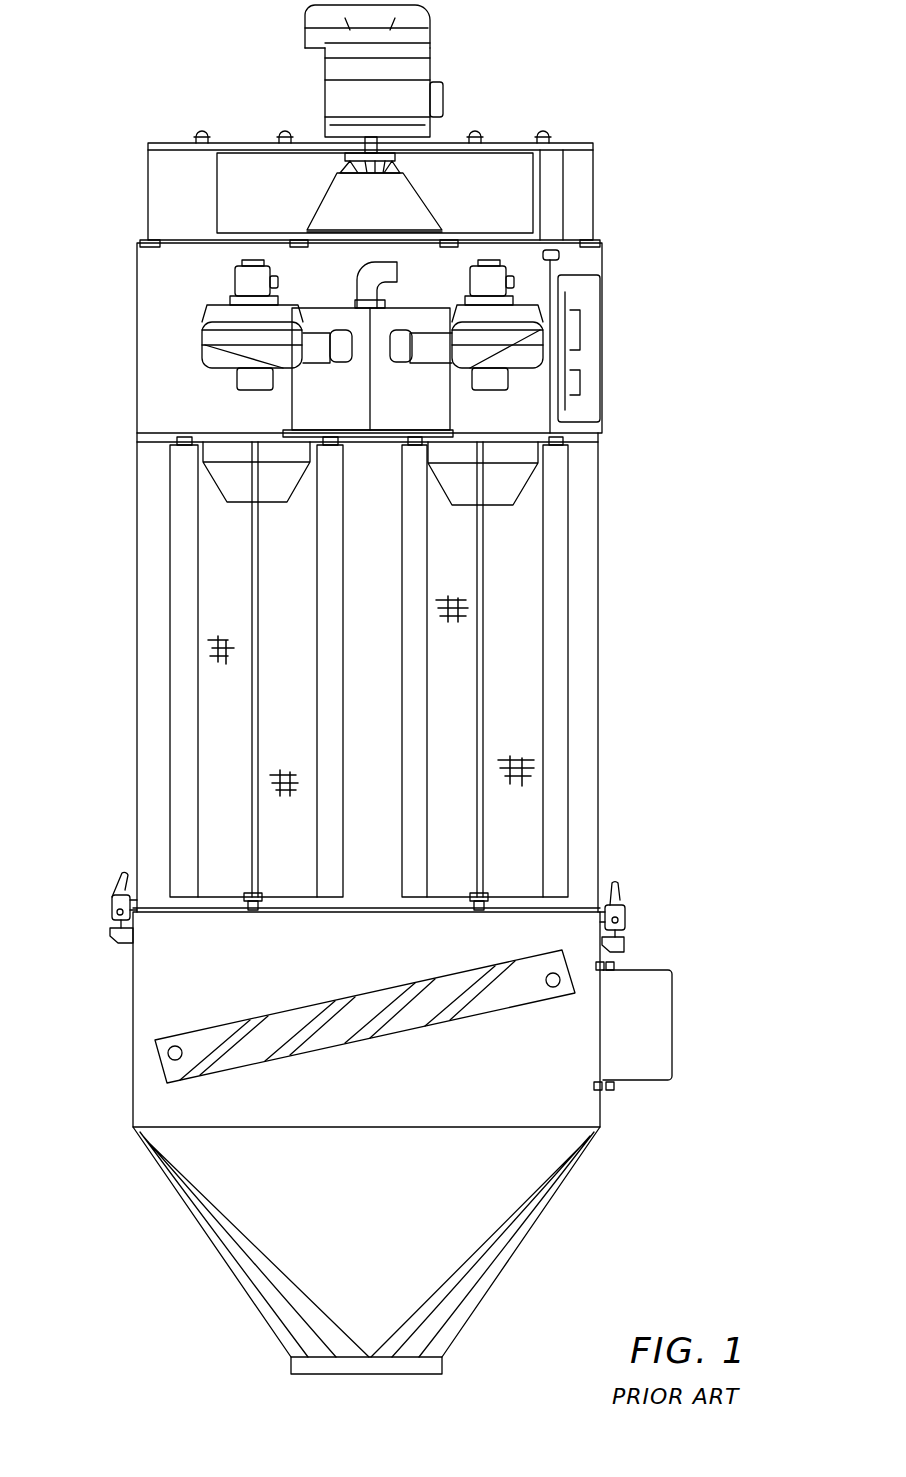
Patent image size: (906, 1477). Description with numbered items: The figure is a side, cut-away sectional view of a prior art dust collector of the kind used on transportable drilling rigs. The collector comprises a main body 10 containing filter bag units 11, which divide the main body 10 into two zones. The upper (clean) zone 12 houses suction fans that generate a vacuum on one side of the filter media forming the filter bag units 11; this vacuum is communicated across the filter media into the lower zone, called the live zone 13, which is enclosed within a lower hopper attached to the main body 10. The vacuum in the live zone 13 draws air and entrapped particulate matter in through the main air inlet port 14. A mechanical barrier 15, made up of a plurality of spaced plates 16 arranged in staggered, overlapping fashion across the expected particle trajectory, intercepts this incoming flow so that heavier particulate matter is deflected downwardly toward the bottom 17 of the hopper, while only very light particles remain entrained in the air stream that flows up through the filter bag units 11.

The main body 10 is at (600, 722).
The filter bag units 11 is at (218, 545).
The upper (clean) zone 12 is at (170, 382).
The live zone 13 is at (160, 980).
The main air inlet port 14 is at (650, 1037).
The mechanical barrier 15 is at (297, 1007).
The spaced plates 16 is at (300, 1033).
The bottom of the hopper 17 is at (405, 1365).